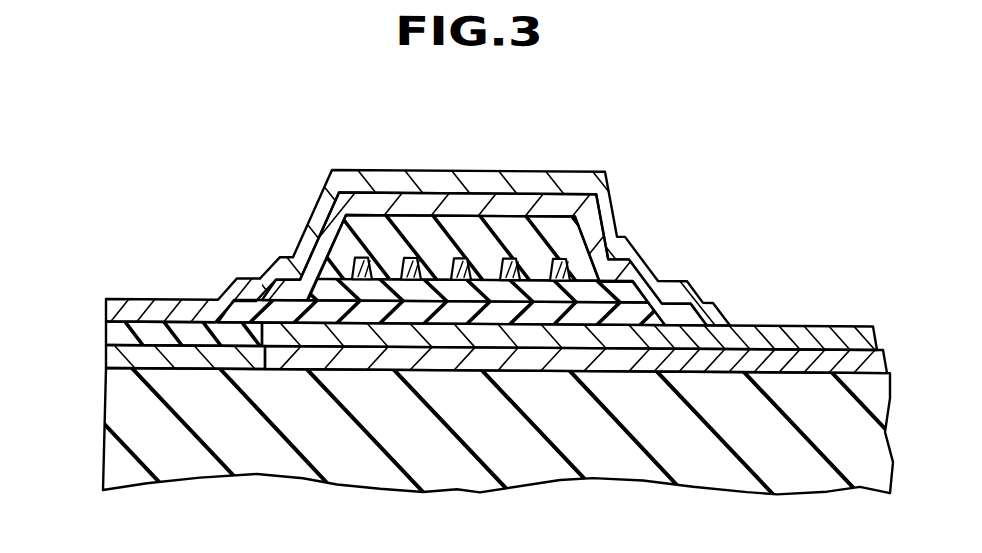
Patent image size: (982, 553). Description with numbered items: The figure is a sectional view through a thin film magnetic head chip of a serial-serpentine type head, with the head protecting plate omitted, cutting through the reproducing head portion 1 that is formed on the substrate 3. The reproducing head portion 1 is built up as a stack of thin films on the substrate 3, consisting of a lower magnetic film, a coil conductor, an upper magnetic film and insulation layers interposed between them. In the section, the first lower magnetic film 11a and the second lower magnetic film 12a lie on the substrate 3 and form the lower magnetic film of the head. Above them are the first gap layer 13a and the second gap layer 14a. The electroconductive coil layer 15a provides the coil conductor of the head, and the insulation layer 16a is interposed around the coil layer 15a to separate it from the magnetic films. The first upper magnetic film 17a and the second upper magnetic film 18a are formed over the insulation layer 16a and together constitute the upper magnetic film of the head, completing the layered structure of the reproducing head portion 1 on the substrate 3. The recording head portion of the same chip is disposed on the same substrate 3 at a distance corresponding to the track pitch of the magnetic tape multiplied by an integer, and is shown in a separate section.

The reproducing head portion 1 is at (242, 163).
The substrate 3 is at (124, 441).
The first lower magnetic film 11a is at (470, 369).
The second lower magnetic film 12a is at (118, 352).
The first gap layer 13a is at (364, 349).
The second gap layer 14a is at (125, 333).
The electroconductive coil layer 15a is at (518, 245).
The insulation layer 16a is at (407, 225).
The first upper magnetic film 17a is at (141, 300).
The second upper magnetic film 18a is at (322, 216).